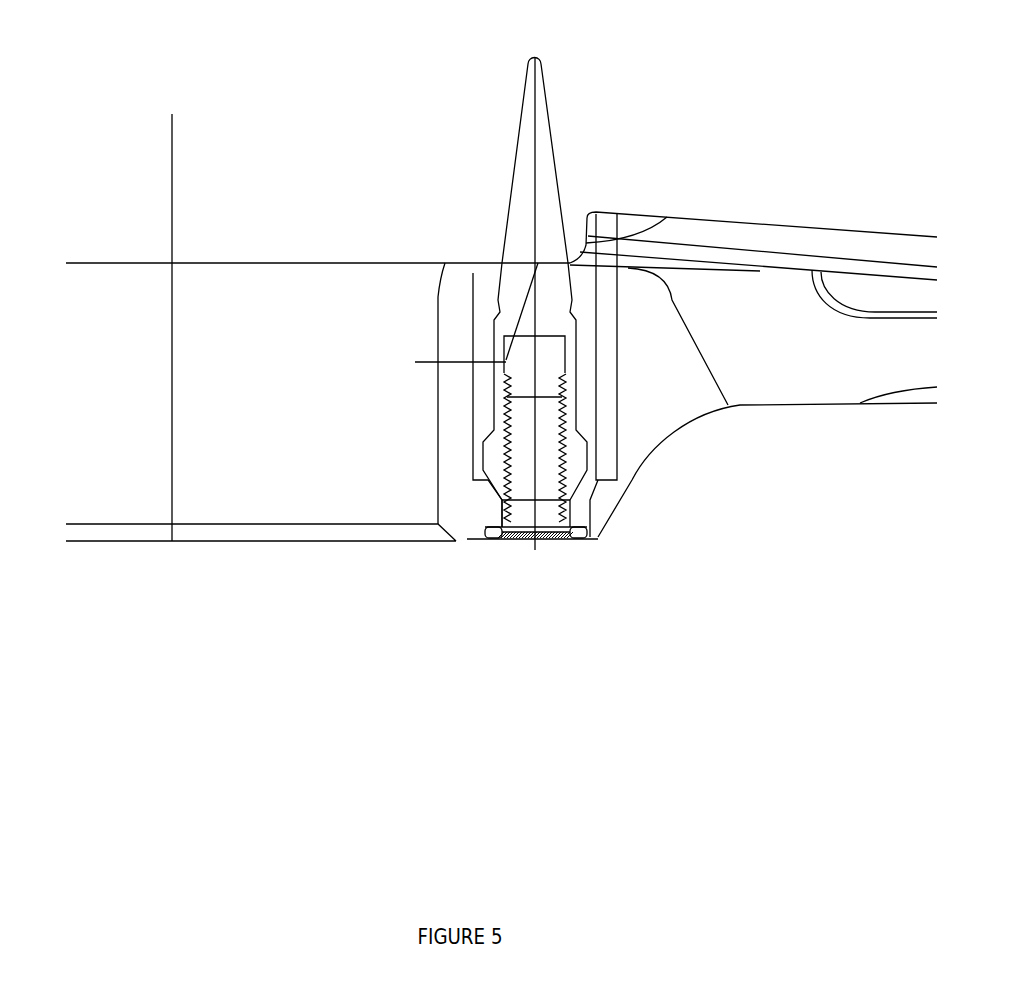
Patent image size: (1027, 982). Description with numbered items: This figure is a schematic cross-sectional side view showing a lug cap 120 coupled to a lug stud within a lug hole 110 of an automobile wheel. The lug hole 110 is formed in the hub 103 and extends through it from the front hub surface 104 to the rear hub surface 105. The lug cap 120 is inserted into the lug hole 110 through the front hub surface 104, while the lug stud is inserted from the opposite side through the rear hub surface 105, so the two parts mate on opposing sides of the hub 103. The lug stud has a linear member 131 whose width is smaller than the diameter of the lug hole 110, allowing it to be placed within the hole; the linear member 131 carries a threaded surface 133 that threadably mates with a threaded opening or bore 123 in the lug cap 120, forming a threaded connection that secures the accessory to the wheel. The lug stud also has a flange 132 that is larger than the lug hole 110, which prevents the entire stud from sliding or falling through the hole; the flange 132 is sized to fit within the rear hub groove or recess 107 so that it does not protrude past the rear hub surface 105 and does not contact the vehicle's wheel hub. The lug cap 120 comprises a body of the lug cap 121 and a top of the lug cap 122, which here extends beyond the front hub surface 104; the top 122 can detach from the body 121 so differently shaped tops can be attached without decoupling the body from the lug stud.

The hub 103 is at (232, 358).
The front hub surface 104 is at (325, 263).
The rear hub surface 105 is at (268, 545).
The rear hub groove or recess 107 is at (582, 537).
The lug hole 110 is at (582, 288).
The lug cap 120 is at (462, 95).
The body of the lug cap 121 is at (543, 363).
The top of the lug cap 122 is at (542, 150).
The threaded opening or bore 123 is at (507, 385).
The linear member 131 is at (525, 502).
The flange 132 is at (560, 537).
The threaded surface 133 is at (562, 502).